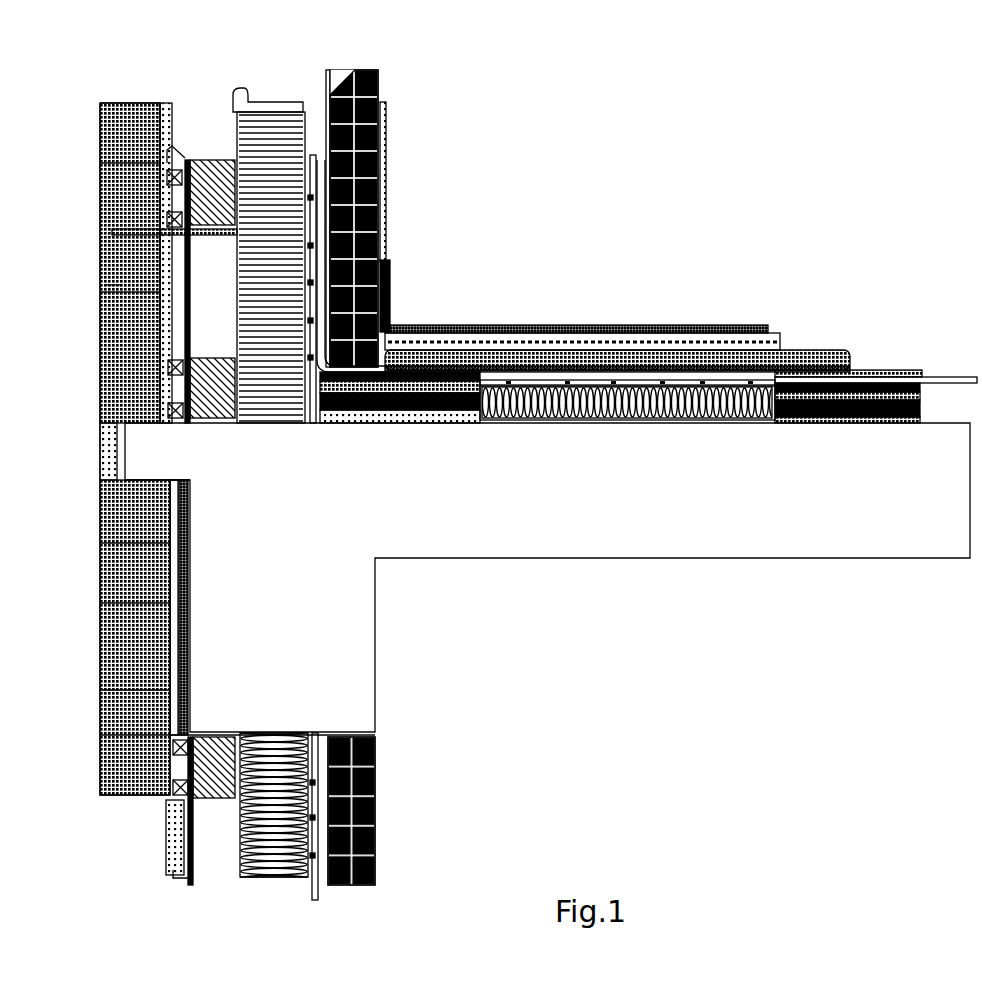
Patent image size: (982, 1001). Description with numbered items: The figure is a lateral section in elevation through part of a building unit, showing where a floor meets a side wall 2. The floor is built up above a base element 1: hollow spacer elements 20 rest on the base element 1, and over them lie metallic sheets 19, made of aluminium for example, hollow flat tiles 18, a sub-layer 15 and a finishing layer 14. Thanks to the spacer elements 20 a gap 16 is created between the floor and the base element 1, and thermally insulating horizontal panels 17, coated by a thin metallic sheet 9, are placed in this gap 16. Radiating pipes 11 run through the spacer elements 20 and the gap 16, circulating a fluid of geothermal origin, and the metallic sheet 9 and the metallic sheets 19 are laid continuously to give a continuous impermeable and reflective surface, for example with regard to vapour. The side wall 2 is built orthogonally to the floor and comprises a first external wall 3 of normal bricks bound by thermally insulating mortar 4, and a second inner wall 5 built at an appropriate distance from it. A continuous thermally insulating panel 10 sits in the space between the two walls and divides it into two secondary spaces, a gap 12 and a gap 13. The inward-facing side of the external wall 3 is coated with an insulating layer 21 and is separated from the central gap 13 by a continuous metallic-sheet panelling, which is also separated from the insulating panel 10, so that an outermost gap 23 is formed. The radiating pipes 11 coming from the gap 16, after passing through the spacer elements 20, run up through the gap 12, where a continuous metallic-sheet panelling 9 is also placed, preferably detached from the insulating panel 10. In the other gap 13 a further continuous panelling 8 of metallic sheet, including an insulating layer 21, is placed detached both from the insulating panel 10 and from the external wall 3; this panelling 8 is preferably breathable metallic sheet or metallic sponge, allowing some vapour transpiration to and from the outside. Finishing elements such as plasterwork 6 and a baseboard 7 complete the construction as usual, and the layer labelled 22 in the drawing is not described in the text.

The base element 1 is at (640, 545).
The side wall 2 is at (132, 92).
The first external wall 3 is at (107, 238).
The thermally insulating mortar 4 is at (106, 288).
The second inner wall 5 is at (375, 150).
The plasterwork 6 is at (380, 185).
The baseboard 7 is at (390, 296).
The continuous panelling 8 is at (185, 348).
The metallic sheet 9 is at (307, 110).
The continuous thermally insulating panel 10 is at (285, 317).
The radiating pipes 11 is at (317, 210).
The secondary space 12 is at (325, 168).
The secondary space 13 is at (207, 140).
The finishing layer 14 is at (662, 325).
The sub-layer 15 is at (722, 355).
The gap 16 is at (567, 373).
The thermally insulating horizontal panels 17 is at (692, 340).
The hollow flat tiles 18 is at (845, 363).
The metallic sheets 19 is at (857, 365).
The hollow spacer elements 20 is at (905, 380).
The insulating layer 21 is at (167, 522).
The plaster layer 22 is at (183, 588).
The outermost gap 23 is at (172, 229).